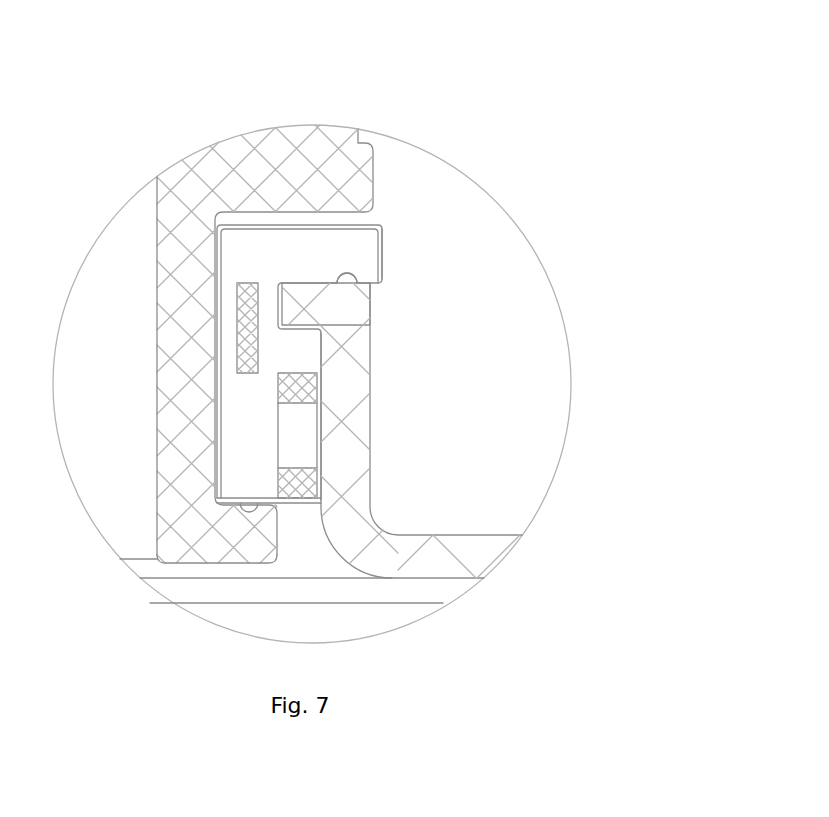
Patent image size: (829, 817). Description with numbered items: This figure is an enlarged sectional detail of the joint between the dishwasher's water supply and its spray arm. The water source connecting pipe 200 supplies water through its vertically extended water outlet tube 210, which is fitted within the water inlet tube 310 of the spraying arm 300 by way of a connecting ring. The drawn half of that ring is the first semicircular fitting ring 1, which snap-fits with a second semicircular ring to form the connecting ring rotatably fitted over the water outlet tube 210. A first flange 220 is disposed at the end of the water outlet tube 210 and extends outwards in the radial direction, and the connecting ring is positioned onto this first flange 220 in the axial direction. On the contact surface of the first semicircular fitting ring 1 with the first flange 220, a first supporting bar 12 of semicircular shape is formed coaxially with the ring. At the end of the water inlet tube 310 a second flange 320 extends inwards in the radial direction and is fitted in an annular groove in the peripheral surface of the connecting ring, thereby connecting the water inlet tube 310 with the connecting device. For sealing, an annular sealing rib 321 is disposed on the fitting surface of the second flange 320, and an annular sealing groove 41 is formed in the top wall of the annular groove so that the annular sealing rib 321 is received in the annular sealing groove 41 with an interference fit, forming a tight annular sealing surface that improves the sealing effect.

The first semicircular fitting ring 1 is at (313, 228).
The first supporting bar 12 is at (250, 503).
The annular sealing groove 41 is at (360, 280).
The water source connecting pipe 200 is at (247, 172).
The water outlet tube 210 is at (175, 372).
The first flange 220 is at (228, 520).
The spraying arm 300 is at (433, 557).
The water inlet tube 310 is at (357, 357).
The second flange 320 is at (323, 305).
The annular sealing rib 321 is at (347, 275).